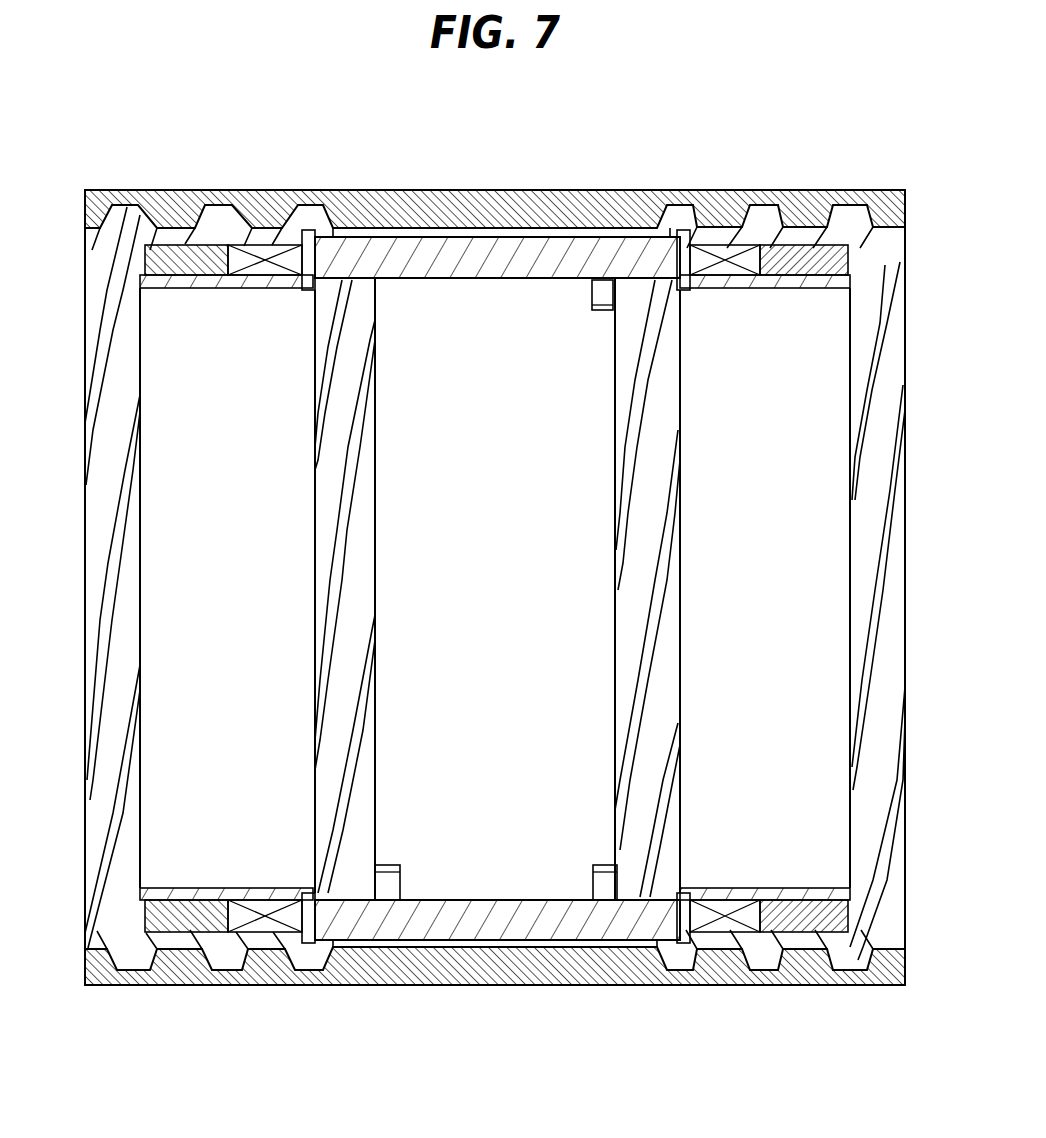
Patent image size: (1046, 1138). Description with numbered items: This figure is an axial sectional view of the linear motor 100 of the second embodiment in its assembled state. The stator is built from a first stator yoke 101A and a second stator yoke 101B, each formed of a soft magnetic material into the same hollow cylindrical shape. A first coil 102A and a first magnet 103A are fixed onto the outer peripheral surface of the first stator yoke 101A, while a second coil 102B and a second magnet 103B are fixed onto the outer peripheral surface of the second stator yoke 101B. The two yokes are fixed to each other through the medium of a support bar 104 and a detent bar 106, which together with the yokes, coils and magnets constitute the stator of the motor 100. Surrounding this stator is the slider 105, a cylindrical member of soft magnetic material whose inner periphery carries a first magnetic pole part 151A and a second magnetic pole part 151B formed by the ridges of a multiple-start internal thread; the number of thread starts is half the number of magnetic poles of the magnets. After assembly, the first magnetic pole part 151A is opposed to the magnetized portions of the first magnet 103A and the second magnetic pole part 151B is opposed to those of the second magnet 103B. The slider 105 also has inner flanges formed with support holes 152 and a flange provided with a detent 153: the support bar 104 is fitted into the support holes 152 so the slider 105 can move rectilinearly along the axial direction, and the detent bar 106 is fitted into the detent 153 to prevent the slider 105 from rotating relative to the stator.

The motor 100 is at (890, 176).
The first stator yoke 101A is at (283, 895).
The second stator yoke 101B is at (697, 903).
The first coil 102A is at (243, 917).
The second coil 102B is at (728, 927).
The first magnet 103A is at (155, 918).
The second magnet 103B is at (822, 973).
The support bar 104 is at (573, 920).
The slider 105 is at (503, 962).
The detent bar 106 is at (437, 250).
The first magnetic pole part 151A is at (268, 215).
The second magnetic pole part 151B is at (818, 215).
The support holes 152 is at (607, 882).
The detent 153 is at (605, 292).